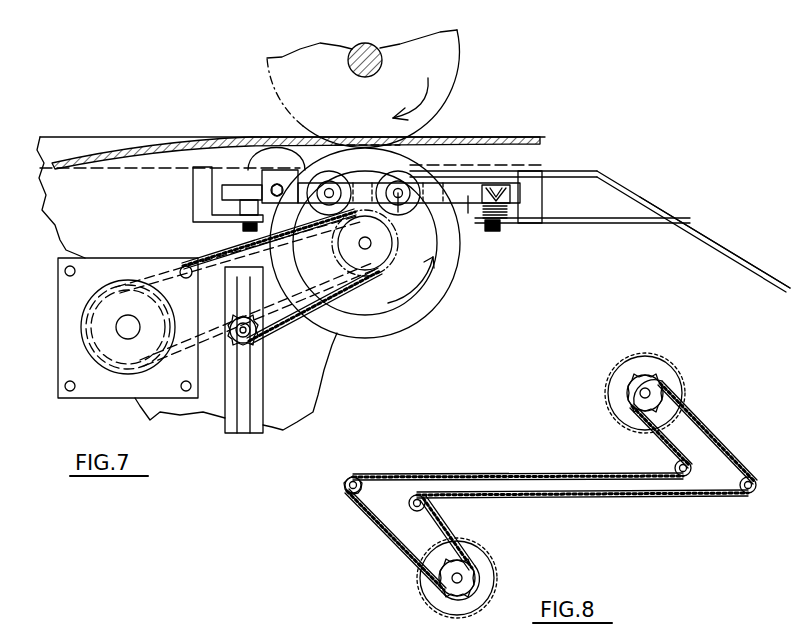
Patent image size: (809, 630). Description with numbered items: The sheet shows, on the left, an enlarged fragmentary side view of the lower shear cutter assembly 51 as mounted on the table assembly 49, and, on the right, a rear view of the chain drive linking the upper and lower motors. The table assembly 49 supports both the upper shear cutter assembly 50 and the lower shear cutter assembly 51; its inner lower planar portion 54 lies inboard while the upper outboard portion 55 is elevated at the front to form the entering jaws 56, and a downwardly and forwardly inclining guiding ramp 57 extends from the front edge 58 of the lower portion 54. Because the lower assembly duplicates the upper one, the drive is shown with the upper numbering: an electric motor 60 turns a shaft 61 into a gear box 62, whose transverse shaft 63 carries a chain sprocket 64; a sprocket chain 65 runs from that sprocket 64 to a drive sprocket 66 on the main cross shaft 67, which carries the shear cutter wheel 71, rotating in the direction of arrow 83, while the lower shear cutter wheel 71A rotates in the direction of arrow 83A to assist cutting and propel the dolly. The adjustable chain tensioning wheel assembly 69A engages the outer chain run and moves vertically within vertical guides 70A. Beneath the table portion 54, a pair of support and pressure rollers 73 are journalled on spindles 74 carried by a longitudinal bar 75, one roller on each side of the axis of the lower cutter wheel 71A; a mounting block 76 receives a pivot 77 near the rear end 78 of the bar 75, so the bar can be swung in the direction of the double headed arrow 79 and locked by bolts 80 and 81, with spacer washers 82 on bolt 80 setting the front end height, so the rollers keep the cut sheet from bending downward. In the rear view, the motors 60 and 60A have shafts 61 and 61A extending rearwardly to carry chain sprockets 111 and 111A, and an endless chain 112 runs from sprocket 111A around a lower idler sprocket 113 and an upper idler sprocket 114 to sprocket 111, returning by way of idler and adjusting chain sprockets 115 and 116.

In FIG. 7, the table assembly 49 is at (532, 170).
In FIG. 7, the upper shear cutter assembly 50 is at (293, 42).
In FIG. 7, the lower shear cutter assembly 51 is at (445, 306).
In FIG. 7, the inner lower planar portion 54 is at (540, 171).
In FIG. 7, the upper outboard portion 55 is at (458, 137).
In FIG. 7, the entering jaws 56 is at (249, 84).
In FIG. 7, the guiding ramp 57 is at (662, 208).
In FIG. 7, the front edge 58 is at (597, 171).
In FIG. 8, the electric motor 60 is at (616, 378).
In FIG. 8, the shaft 61 is at (664, 380).
In FIG. 7, the gear box 62 is at (138, 262).
In FIG. 7, the transverse shaft 63 is at (136, 310).
In FIG. 7, the chain sprocket 64 is at (100, 366).
In FIG. 7, the sprocket chain 65 is at (214, 250).
In FIG. 7, the drive sprocket 66 is at (346, 275).
In FIG. 7, the main cross shaft 67 is at (362, 77).
In FIG. 7, the adjustable chain tensioning wheel assembly 69A is at (258, 342).
In FIG. 7, the vertical guides 70A is at (252, 380).
In FIG. 7, the shear cutter wheel 71 is at (444, 106).
In FIG. 7, the lower shear cutter wheel 71A is at (398, 324).
In FIG. 7, the support and pressure rollers 73 is at (334, 214).
In FIG. 7, the spindles 74 is at (398, 212).
In FIG. 7, the bar or block 75 is at (468, 216).
In FIG. 7, the mounting block 76 is at (294, 180).
In FIG. 7, the pivot 77 is at (276, 184).
In FIG. 7, the rear end 78 is at (222, 192).
In FIG. 7, the double headed arrow 79 is at (542, 197).
In FIG. 7, the bolt 80 is at (494, 240).
In FIG. 7, the bolt 81 is at (246, 231).
In FIG. 7, the spacer washers 82 is at (502, 228).
In FIG. 7, the arrow 83 is at (416, 106).
In FIG. 7, the arrow 83A is at (412, 296).
In FIG. 8, the chain sprocket 111 is at (652, 393).
In FIG. 8, the chain sprocket 111A is at (462, 574).
In FIG. 8, the endless chain 112 is at (536, 474).
In FIG. 8, the lower idler sprocket 113 is at (350, 476).
In FIG. 8, the upper idler sprocket 114 is at (676, 464).
In FIG. 8, the idler and adjusting chain sprocket 115 is at (748, 477).
In FIG. 8, the idler and adjusting chain sprocket 116 is at (425, 504).
In FIG. 8, the electric motor 60A is at (424, 586).
In FIG. 8, the shaft 61A is at (476, 576).